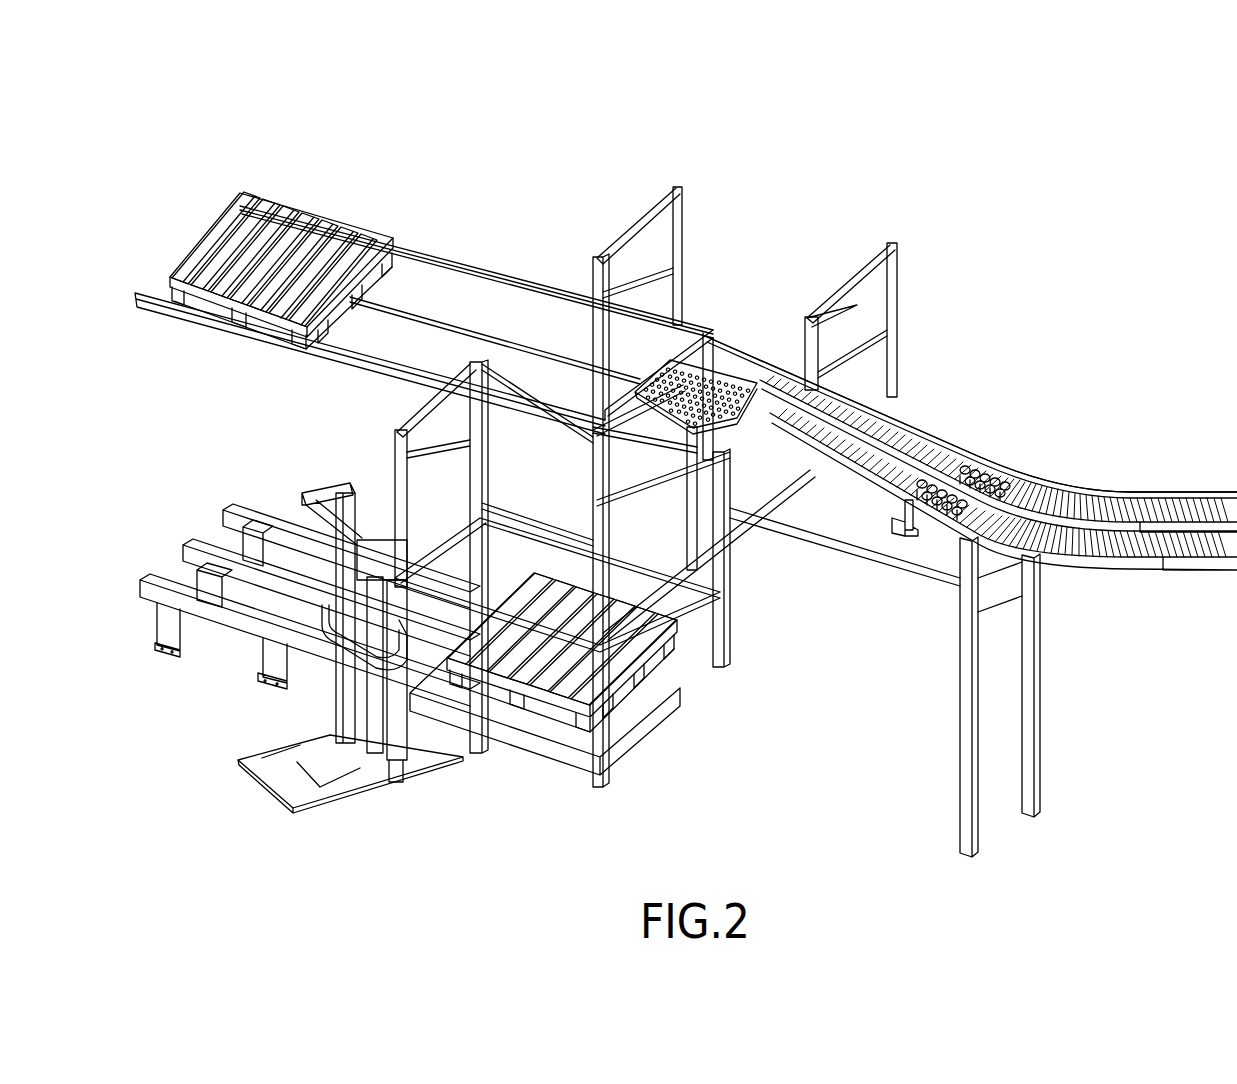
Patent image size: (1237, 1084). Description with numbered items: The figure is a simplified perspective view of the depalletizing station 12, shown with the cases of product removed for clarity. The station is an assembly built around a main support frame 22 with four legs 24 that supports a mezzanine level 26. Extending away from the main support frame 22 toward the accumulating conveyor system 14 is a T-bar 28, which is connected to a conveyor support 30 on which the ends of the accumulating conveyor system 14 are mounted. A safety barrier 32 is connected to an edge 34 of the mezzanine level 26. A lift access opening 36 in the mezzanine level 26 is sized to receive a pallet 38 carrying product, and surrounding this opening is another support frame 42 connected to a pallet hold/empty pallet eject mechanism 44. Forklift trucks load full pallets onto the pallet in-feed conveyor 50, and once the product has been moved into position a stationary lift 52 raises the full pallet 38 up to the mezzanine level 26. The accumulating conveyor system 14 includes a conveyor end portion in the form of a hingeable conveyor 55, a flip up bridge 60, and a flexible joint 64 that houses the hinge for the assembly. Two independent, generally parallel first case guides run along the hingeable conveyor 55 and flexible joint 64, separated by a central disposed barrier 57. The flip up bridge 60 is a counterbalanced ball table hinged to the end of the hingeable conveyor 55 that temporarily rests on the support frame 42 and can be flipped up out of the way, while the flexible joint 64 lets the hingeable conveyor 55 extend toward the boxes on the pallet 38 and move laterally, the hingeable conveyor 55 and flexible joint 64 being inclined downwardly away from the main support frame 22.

The depalletizing station 12 is at (867, 168).
The accumulating conveyor system 14 is at (1176, 462).
The main support frame 22 is at (686, 608).
The legs 24 is at (486, 742).
The mezzanine level 26 is at (563, 634).
The T-bar 28 is at (908, 578).
The conveyor support 30 is at (958, 762).
The safety barrier 32 is at (686, 220).
The edge 34 is at (893, 402).
The lift access opening 36 is at (549, 460).
The pallet 38 is at (338, 238).
The support frame 42 is at (704, 330).
The pallet hold/empty pallet eject mechanism 44 is at (454, 236).
The pallet in-feed conveyor 50 is at (220, 628).
The stationary lift 52 is at (402, 738).
The hingeable conveyor 55 is at (953, 432).
The central disposed barrier 57 is at (897, 428).
The flip up bridge 60 is at (745, 382).
The flexible joint 64 is at (1003, 462).